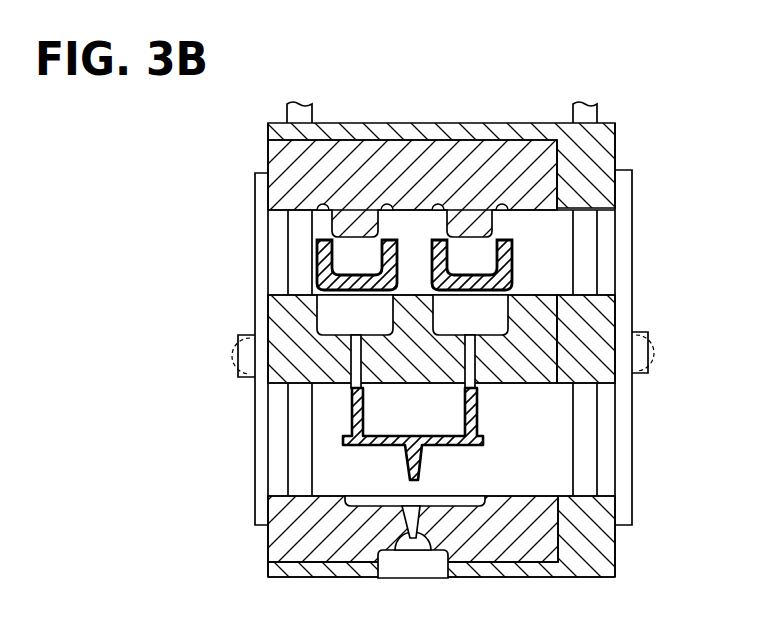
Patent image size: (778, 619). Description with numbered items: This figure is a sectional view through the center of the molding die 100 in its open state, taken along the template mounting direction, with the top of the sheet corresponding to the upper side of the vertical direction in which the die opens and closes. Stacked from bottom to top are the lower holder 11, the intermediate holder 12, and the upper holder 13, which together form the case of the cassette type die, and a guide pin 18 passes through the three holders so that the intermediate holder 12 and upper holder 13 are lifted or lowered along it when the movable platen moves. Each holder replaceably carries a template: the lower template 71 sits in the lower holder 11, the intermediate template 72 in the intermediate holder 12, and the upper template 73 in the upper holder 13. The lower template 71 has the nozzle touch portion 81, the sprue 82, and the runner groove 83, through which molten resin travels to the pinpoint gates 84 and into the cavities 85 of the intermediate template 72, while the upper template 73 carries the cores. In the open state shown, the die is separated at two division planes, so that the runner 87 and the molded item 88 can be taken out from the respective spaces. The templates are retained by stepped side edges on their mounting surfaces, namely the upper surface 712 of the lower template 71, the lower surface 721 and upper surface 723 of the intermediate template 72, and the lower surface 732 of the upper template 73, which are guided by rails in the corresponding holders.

The molding die 100 is at (491, 88).
The guide pin 18 is at (302, 110).
The upper holder 13 is at (588, 150).
The upper template 73 is at (297, 160).
The lower surface 732 is at (293, 215).
The upper surface 723 is at (295, 292).
The intermediate template 72 is at (297, 312).
The intermediate holder 12 is at (588, 312).
The molded item 88 is at (505, 268).
The lower surface 721 is at (318, 395).
The cavity 85 is at (378, 320).
The pinpoint gate 84 is at (475, 335).
The runner 87 is at (483, 440).
The upper surface 712 is at (328, 488).
The runner groove 83 is at (462, 497).
The lower template 71 is at (305, 528).
The lower holder 11 is at (588, 530).
The sprue 82 is at (410, 508).
The nozzle touch portion 81 is at (418, 548).